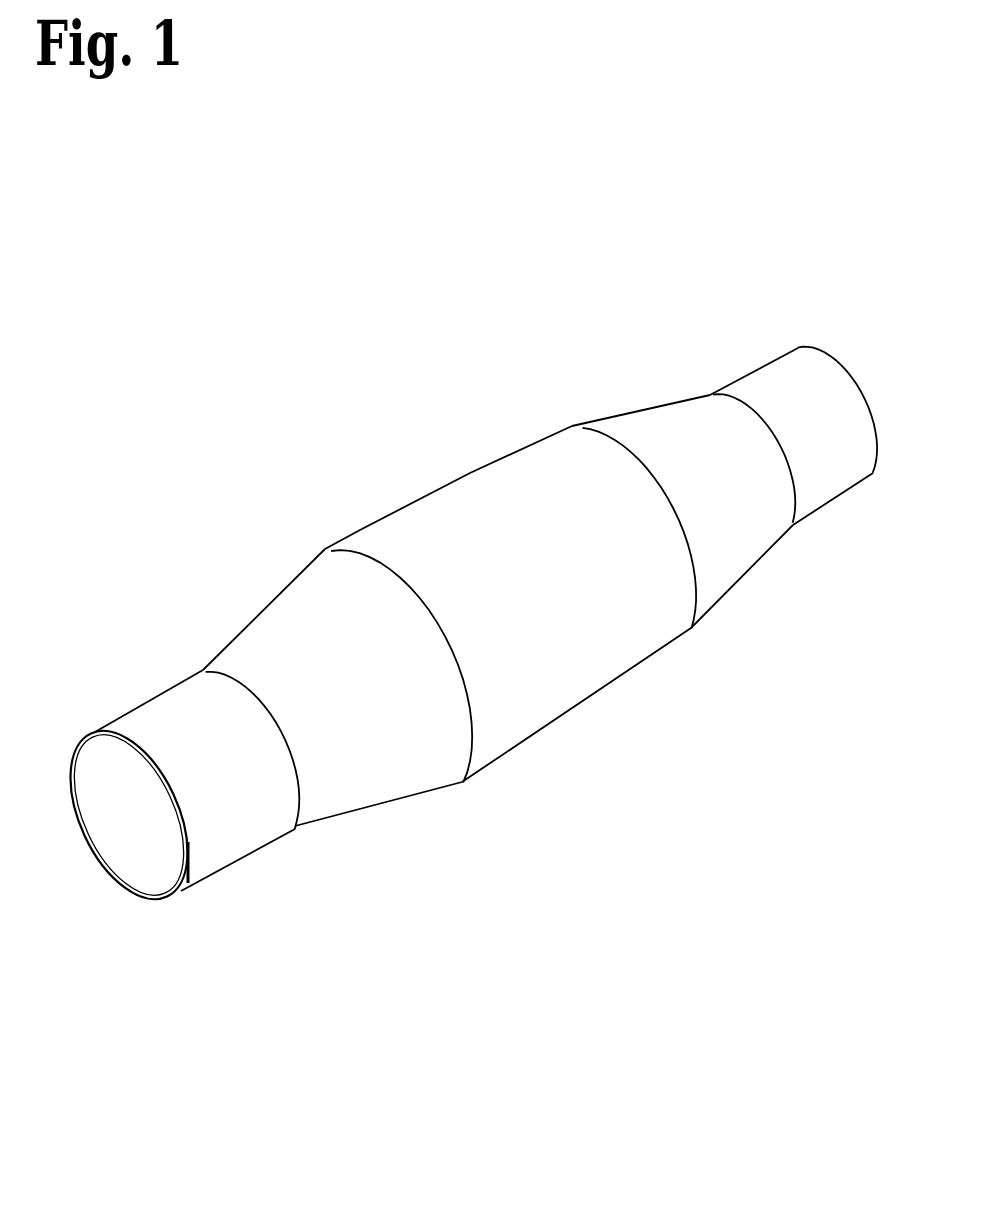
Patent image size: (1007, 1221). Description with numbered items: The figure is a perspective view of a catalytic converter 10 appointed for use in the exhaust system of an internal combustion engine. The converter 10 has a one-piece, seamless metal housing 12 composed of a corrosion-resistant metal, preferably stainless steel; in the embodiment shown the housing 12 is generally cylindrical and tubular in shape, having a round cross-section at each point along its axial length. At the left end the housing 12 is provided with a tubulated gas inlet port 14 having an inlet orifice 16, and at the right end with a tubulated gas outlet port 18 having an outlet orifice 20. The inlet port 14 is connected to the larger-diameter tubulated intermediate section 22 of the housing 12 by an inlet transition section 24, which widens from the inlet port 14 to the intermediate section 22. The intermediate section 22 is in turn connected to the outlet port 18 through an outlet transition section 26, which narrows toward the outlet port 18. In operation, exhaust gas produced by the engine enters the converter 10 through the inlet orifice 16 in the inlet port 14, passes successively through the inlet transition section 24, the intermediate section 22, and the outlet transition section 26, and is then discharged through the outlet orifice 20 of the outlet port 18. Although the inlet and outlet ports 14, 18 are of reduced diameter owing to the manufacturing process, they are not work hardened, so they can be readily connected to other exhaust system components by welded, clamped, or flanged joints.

The catalytic converter 10 is at (261, 337).
The housing 12 is at (360, 530).
The gas inlet port 14 is at (163, 688).
The inlet orifice 16 is at (112, 857).
The gas outlet port 18 is at (768, 362).
The outlet orifice 20 is at (858, 386).
The intermediate section 22 is at (470, 473).
The inlet transition section 24 is at (236, 631).
The outlet transition section 26 is at (647, 405).